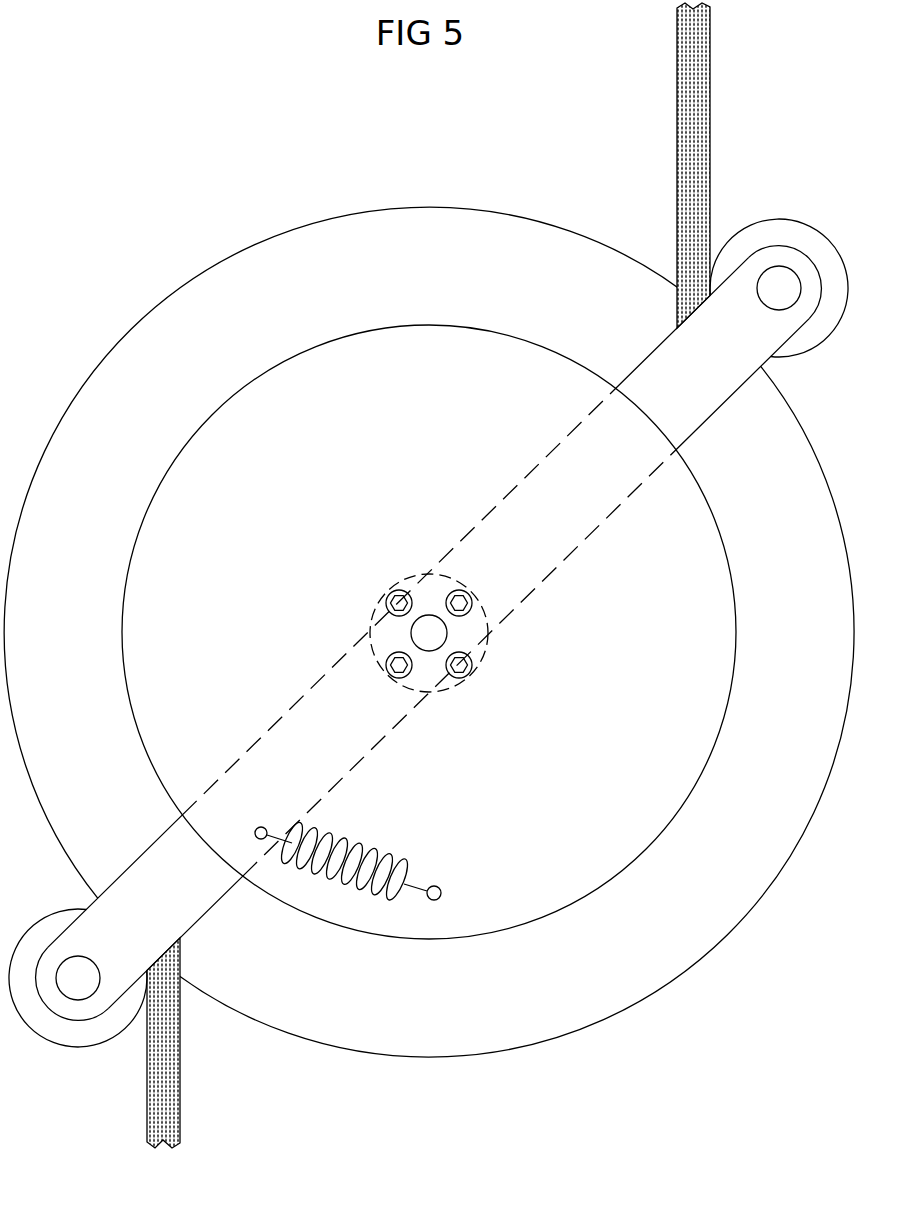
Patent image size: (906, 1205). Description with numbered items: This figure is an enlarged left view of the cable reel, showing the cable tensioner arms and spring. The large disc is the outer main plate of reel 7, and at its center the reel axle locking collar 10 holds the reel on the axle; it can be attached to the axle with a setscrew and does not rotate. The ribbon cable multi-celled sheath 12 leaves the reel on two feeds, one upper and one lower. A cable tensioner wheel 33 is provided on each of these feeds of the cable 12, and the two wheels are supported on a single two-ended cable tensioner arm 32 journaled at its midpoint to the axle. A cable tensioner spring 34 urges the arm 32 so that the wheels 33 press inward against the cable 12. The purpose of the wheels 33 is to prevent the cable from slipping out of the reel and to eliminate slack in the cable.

The outer main plate of reel 7 is at (212, 268).
The reel axle locking collar 10 is at (378, 626).
The ribbon cable multi-celled sheath 12 is at (679, 97).
The cable tensioner arm 32 is at (655, 358).
The cable tensioner wheel 33 is at (767, 227).
The cable tensioner spring 34 is at (382, 850).